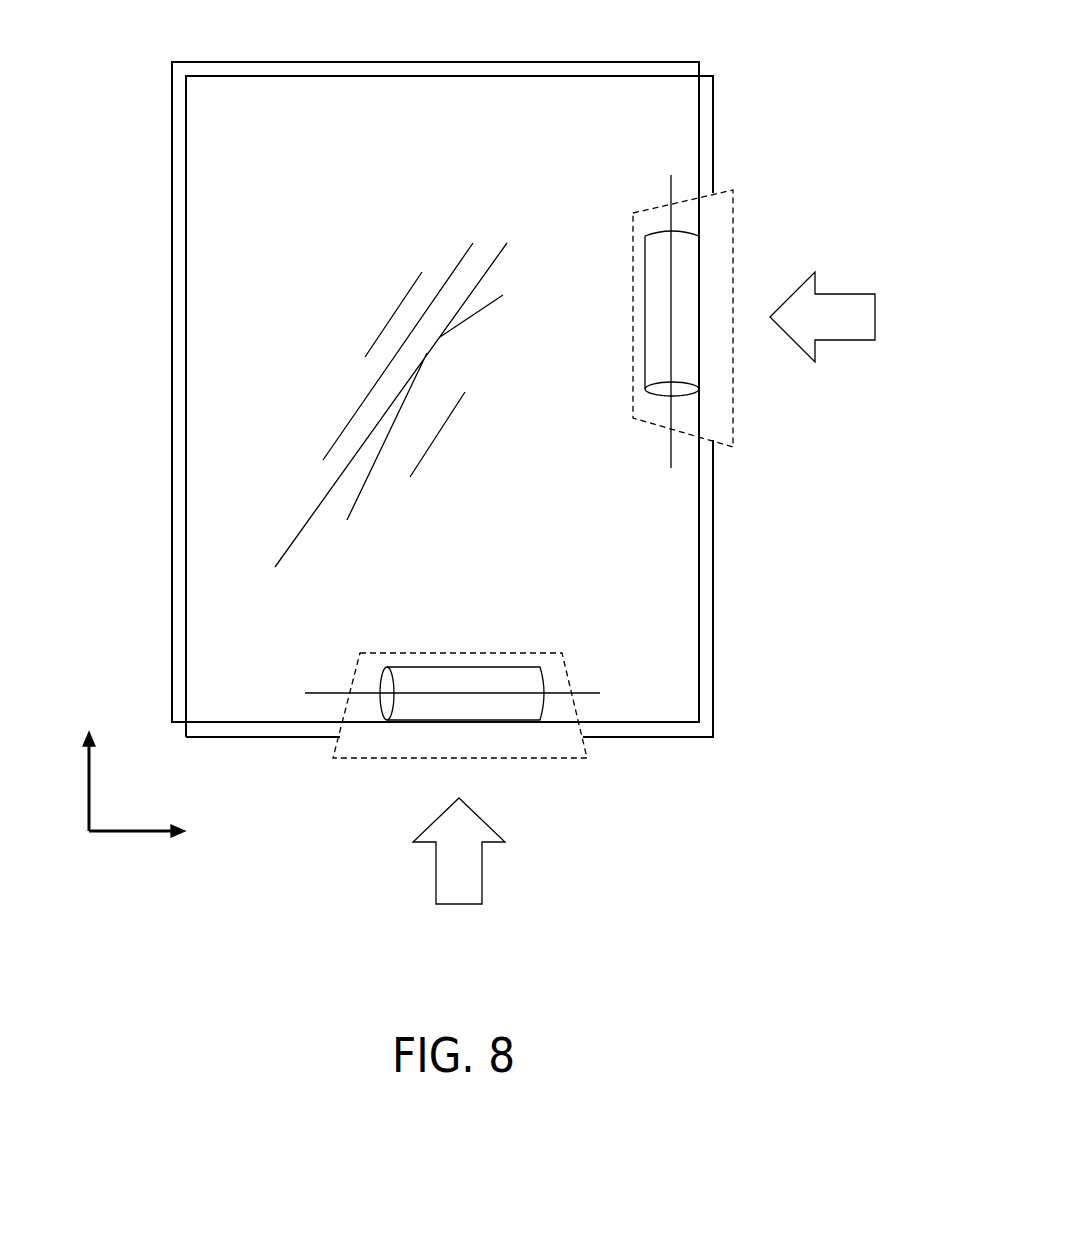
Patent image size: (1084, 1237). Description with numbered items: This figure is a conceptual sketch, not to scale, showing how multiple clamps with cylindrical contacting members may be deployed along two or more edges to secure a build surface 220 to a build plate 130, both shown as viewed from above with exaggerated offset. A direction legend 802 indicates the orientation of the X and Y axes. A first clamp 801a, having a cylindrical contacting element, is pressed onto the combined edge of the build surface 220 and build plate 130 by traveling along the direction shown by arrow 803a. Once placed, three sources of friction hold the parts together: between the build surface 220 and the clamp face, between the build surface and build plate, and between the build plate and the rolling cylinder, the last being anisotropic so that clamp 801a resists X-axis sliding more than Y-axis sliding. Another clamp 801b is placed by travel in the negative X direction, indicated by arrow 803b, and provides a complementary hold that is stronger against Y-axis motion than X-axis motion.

The build plate 130 is at (600, 62).
The build surface 220 is at (713, 98).
The first clamp 801a is at (558, 758).
The clamp 801b is at (733, 190).
The direction legend 802 is at (91, 835).
The arrow 803a is at (482, 887).
The arrow 803b is at (838, 295).